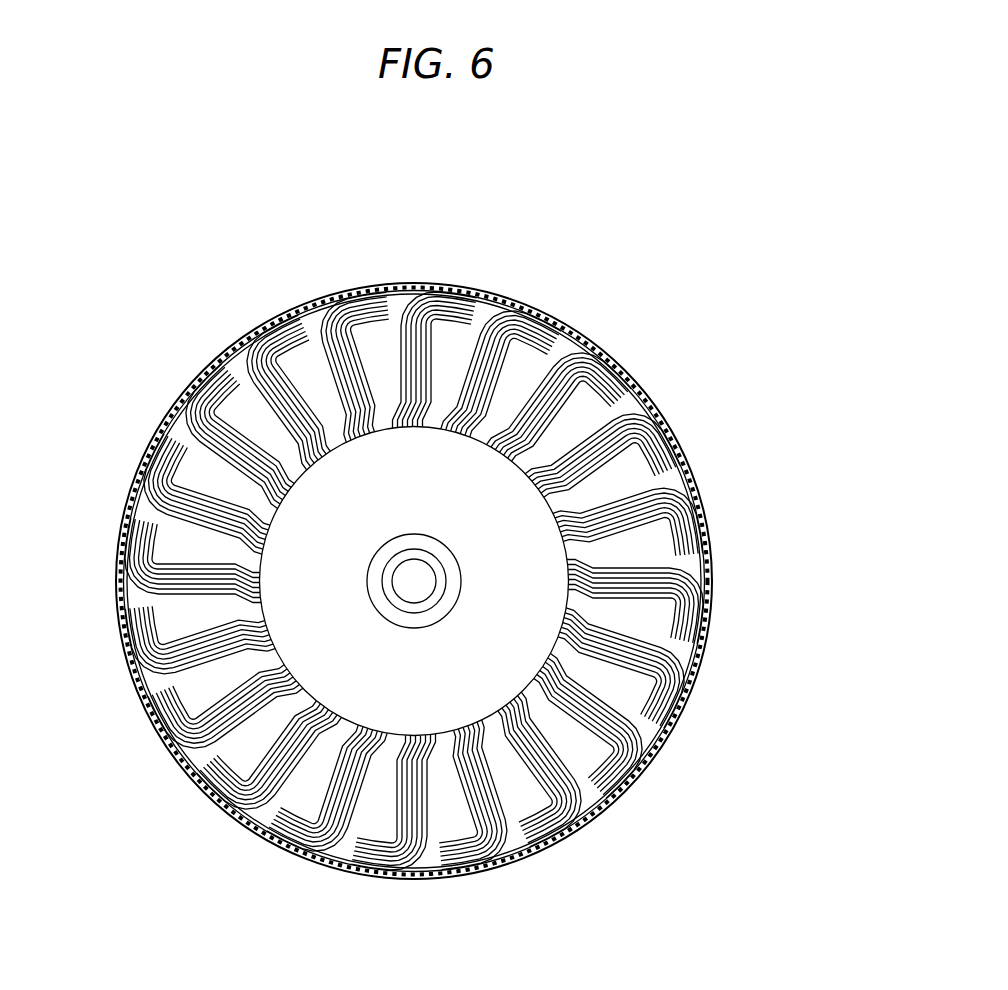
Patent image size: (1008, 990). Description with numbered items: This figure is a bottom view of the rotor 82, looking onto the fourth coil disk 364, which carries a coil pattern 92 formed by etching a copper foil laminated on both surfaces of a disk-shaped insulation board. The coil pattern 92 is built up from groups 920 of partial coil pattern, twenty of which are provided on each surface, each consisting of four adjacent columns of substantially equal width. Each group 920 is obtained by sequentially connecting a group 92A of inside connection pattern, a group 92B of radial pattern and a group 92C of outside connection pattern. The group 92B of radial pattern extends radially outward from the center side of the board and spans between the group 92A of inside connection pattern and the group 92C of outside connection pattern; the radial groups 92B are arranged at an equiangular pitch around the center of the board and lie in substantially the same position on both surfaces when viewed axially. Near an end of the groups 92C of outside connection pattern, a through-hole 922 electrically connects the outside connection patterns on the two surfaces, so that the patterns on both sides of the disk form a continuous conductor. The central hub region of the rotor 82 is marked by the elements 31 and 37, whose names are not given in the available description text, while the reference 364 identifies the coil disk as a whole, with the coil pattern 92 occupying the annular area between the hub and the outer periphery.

The rotor 82 is at (93, 887).
The fourth coil disk 364 is at (625, 362).
The through-hole 922 is at (663, 741).
The coil pattern 92 is at (492, 581).
The group of partial coil pattern 920 is at (709, 575).
The group of inside connection pattern 92A is at (618, 513).
The group of radial pattern 92B is at (700, 567).
The group of outside connection pattern 92C is at (683, 524).
The rotor core 37 is at (347, 662).
The shaft 31 is at (420, 590).